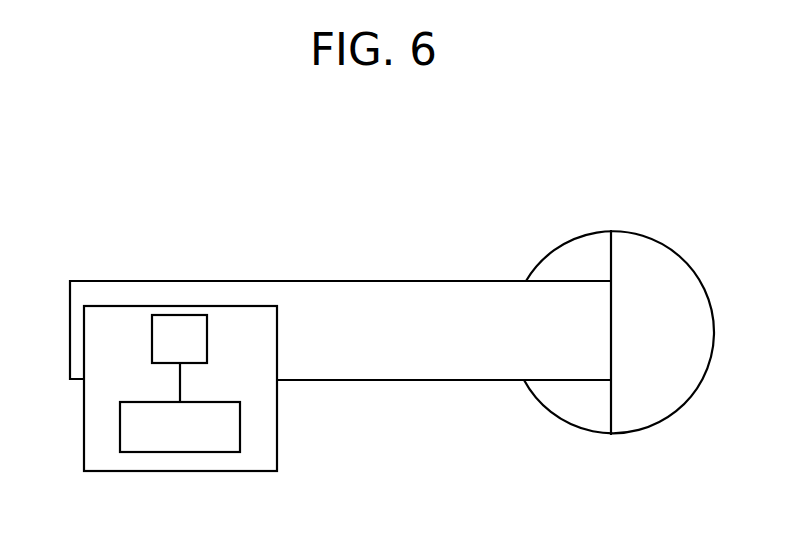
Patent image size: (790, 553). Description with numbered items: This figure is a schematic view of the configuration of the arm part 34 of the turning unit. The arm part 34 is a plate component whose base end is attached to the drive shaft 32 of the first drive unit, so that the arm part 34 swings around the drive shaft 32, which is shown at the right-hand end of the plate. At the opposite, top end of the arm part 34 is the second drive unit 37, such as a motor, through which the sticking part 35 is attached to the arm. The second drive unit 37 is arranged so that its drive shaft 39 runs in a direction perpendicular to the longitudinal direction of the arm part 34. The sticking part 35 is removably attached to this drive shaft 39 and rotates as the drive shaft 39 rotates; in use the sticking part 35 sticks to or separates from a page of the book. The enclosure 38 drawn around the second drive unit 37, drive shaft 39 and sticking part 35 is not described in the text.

The drive shaft 32 is at (612, 251).
The arm part 34 is at (337, 281).
The sticking part 35 is at (213, 453).
The second drive unit 37 is at (173, 315).
The housing 38 is at (277, 432).
The drive shaft 39 is at (179, 388).